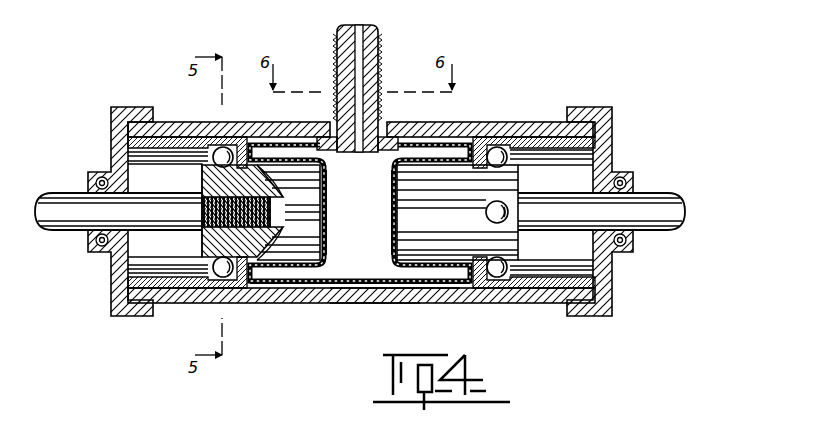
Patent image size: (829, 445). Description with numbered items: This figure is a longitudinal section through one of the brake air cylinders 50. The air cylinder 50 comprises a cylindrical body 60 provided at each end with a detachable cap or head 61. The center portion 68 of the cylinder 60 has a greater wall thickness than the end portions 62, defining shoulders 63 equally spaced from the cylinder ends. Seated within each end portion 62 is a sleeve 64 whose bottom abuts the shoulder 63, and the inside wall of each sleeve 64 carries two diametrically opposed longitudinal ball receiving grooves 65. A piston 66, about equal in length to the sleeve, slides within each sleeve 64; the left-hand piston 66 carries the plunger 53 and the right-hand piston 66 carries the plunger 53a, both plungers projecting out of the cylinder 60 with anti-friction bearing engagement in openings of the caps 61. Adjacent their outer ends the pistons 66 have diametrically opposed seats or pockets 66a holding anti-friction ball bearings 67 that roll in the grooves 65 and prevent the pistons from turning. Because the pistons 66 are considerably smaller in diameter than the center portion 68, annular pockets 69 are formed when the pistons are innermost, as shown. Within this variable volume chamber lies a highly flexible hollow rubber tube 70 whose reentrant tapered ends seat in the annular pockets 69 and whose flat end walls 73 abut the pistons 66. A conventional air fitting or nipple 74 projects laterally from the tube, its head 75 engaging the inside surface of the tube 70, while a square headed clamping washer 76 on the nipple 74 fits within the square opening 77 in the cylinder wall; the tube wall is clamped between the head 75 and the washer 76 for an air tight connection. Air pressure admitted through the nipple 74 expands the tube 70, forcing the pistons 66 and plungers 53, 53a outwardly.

The air cylinder 50 is at (362, 187).
The plunger 53 is at (63, 205).
The plunger 53a is at (655, 200).
The cylindrical body 60 is at (388, 292).
The detachable cap 61 is at (112, 268).
The end portion 62 is at (165, 124).
The shoulder 63 is at (248, 303).
The sleeve 64 is at (178, 304).
The ball receiving groove 65 is at (145, 270).
The piston 66 is at (293, 243).
The seat or pocket 66a is at (486, 212).
The anti-friction ball bearing 67 is at (228, 148).
The center portion 68 is at (373, 290).
The annular pocket 69 is at (432, 277).
The hollow rubber tube 70 is at (359, 212).
The flat end wall 73 is at (331, 206).
The air fitting or nipple 74 is at (361, 100).
The head 75 is at (375, 153).
The square headed clamping washer 76 is at (385, 125).
The square opening 77 is at (334, 125).